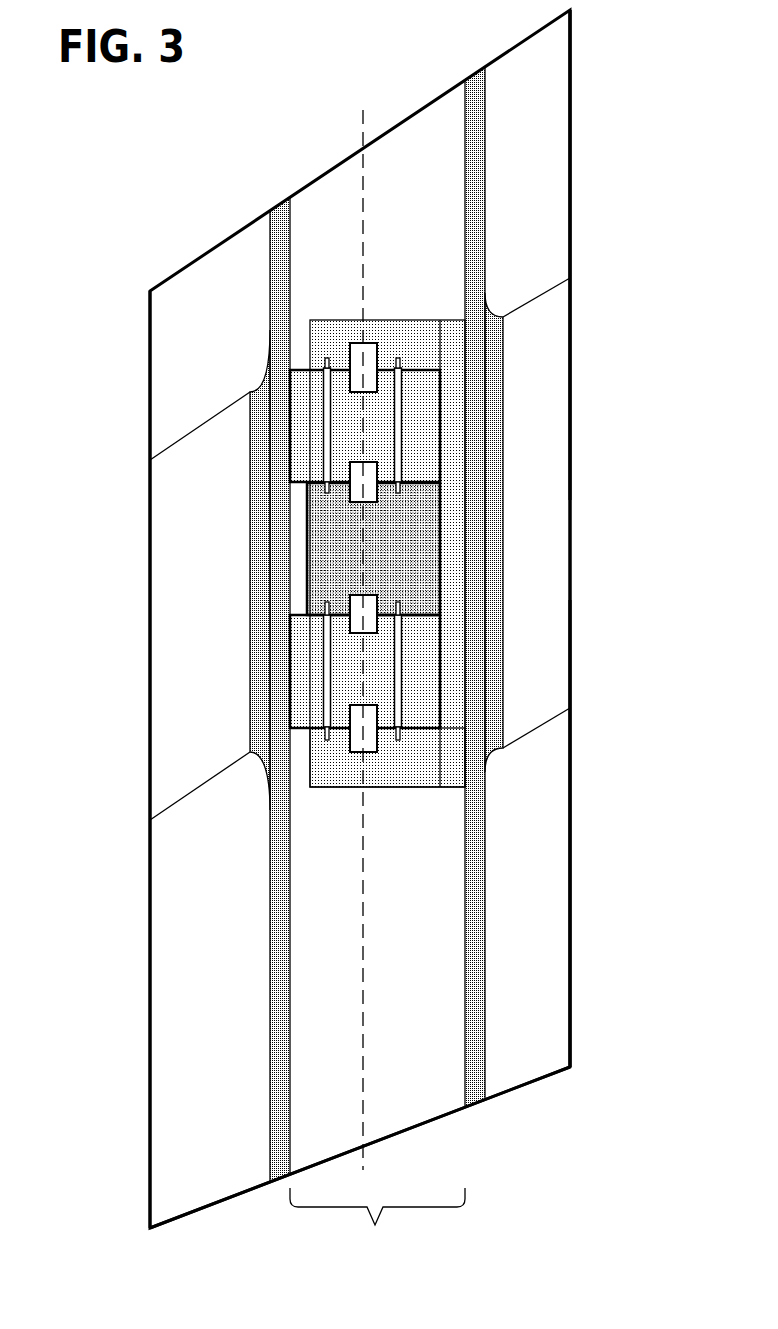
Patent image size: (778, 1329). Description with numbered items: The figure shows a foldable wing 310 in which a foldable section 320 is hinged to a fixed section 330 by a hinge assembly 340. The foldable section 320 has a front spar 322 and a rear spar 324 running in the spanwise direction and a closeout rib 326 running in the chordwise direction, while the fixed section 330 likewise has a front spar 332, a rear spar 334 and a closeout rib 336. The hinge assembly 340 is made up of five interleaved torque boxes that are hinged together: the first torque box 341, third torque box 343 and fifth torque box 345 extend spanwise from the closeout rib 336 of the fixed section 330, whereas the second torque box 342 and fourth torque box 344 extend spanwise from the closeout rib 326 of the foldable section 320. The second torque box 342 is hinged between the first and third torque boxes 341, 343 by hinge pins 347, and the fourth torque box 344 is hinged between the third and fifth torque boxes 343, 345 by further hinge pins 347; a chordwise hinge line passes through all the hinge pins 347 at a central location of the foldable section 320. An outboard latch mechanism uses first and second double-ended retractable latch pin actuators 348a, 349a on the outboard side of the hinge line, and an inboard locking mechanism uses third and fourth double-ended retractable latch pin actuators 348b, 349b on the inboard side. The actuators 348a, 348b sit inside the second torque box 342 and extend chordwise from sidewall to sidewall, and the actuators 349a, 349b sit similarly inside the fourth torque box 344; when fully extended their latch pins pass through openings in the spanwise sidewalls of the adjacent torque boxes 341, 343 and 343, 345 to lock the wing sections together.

The foldable wing 310 is at (225, 171).
The foldable section 320 is at (148, 324).
The front spar 322 is at (150, 380).
The rear spar 324 is at (150, 1160).
The closeout rib 326 is at (250, 625).
The fixed section 330 is at (574, 79).
The front spar 332 is at (572, 171).
The rear spar 334 is at (572, 966).
The closeout rib 336 is at (503, 477).
The hinge assembly 340 is at (377, 1224).
The first torque box 341 is at (395, 320).
The second torque box 342 is at (305, 465).
The third torque box 343 is at (388, 552).
The fourth torque box 344 is at (305, 700).
The fifth torque box 345 is at (400, 788).
The hinge pins 347 is at (357, 342).
The first double-ended retractable latch pin actuator 348a is at (320, 442).
The third double-ended retractable latch pin actuator 348b is at (403, 420).
The second double-ended retractable latch pin actuator 349a is at (325, 660).
The fourth double-ended retractable latch pin actuator 349b is at (403, 660).